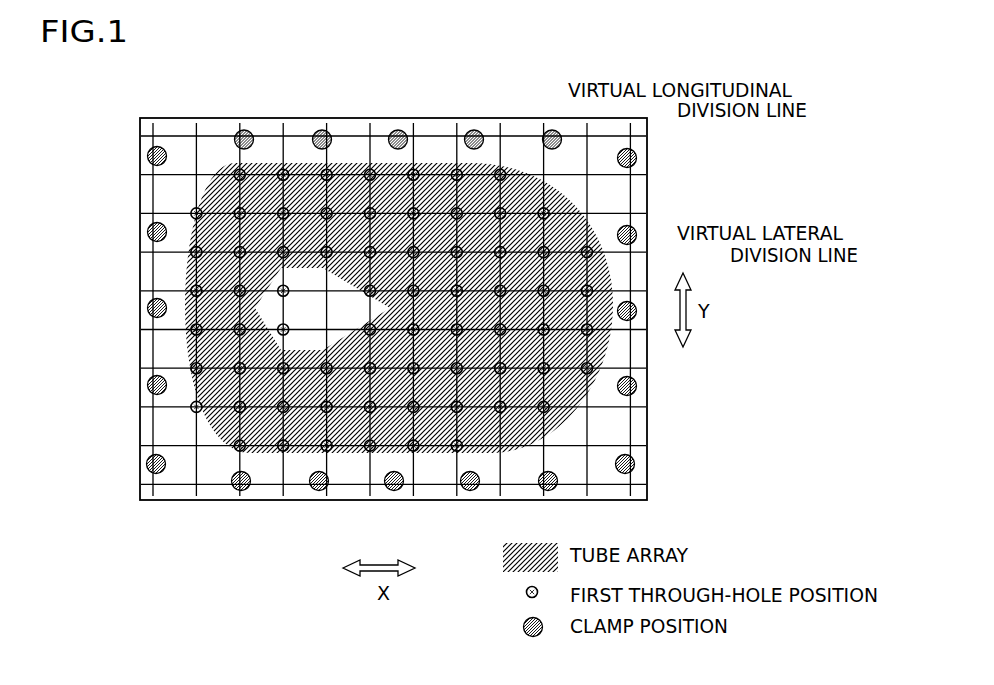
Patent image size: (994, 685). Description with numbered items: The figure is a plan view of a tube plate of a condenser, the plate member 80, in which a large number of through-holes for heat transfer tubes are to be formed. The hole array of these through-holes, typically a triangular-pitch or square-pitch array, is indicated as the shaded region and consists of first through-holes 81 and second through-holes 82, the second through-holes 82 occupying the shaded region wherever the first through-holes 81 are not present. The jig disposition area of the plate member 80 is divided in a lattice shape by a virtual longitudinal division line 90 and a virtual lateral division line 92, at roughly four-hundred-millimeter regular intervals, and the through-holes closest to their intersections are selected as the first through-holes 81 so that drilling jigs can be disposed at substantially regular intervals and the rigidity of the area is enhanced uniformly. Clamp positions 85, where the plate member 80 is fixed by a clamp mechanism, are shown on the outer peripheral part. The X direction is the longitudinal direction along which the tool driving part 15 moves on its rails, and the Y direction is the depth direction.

The tool driving part 15 is at (401, 327).
The plate member 80 is at (385, 117).
The first through-holes 81 is at (292, 167).
The second through-holes 82 is at (443, 168).
The clamp positions 85 is at (148, 385).
The virtual longitudinal division line 90 is at (500, 172).
The virtual lateral division line 92 is at (608, 177).